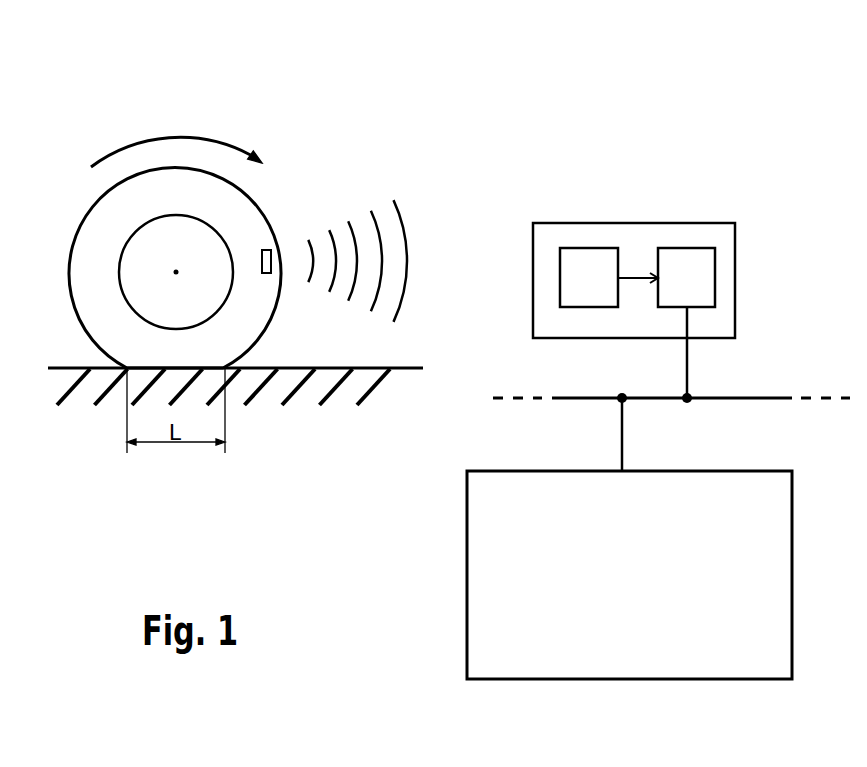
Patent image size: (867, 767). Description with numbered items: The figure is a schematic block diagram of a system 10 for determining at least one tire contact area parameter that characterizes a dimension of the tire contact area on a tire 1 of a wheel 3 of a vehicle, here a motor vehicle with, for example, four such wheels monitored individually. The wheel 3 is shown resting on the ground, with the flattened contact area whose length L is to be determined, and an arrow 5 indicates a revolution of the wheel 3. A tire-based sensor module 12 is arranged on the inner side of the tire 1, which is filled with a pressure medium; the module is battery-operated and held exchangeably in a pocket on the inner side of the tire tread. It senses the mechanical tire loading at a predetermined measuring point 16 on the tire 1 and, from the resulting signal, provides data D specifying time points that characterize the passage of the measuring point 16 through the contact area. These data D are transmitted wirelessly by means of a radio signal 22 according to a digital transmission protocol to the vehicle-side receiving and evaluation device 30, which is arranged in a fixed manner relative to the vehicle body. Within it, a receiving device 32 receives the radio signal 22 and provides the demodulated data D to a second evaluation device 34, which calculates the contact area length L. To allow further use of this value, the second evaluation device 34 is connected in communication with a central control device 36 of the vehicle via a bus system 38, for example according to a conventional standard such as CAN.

The tire 1 is at (238, 220).
The wheel 3 is at (168, 255).
The arrow 5 is at (175, 138).
The system 10 is at (524, 67).
The sensor module 12 is at (273, 248).
The measuring point 16 is at (275, 262).
The radio signal 22 is at (417, 180).
The receiving and evaluation device 30 is at (634, 213).
The receiving device 32 is at (577, 285).
The second evaluation device 34 is at (675, 285).
The central control device 36 is at (610, 586).
The bus system 38 is at (755, 398).